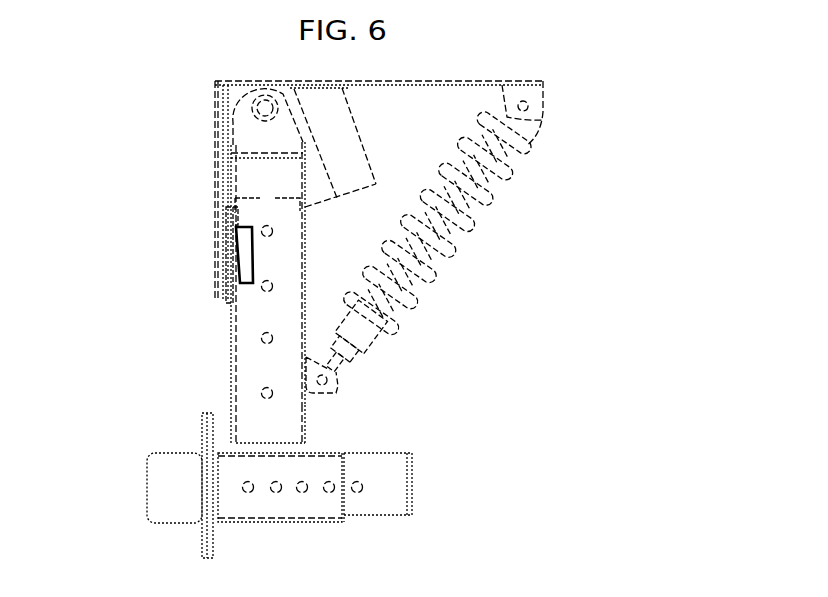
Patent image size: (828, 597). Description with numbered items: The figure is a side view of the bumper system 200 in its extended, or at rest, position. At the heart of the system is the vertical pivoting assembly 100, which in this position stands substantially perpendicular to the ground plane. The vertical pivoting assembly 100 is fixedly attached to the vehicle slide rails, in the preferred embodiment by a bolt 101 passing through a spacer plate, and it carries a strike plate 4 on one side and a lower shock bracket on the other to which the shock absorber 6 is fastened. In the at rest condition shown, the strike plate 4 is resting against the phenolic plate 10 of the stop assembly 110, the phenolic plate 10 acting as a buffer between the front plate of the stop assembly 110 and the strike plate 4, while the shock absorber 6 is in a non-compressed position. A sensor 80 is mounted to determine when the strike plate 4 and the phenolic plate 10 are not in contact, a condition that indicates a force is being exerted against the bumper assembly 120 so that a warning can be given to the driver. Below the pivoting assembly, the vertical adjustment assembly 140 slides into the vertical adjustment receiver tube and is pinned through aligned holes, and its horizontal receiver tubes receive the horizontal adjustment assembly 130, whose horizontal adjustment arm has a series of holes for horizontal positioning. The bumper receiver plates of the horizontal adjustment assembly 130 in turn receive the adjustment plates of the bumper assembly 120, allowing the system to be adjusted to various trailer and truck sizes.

The bumper system 200 is at (712, 118).
The phenolic plate 10 is at (223, 300).
The vertical pivoting assembly 100 is at (250, 187).
The bolt 101 is at (263, 105).
The sensor 80 is at (241, 237).
The strike plate 4 is at (231, 250).
The vertical adjustment assembly 140 is at (287, 420).
The horizontal adjustment assembly 130 is at (393, 493).
The bumper assembly 120 is at (160, 483).
The stop assembly 110 is at (462, 228).
The shock absorber 6 is at (428, 265).